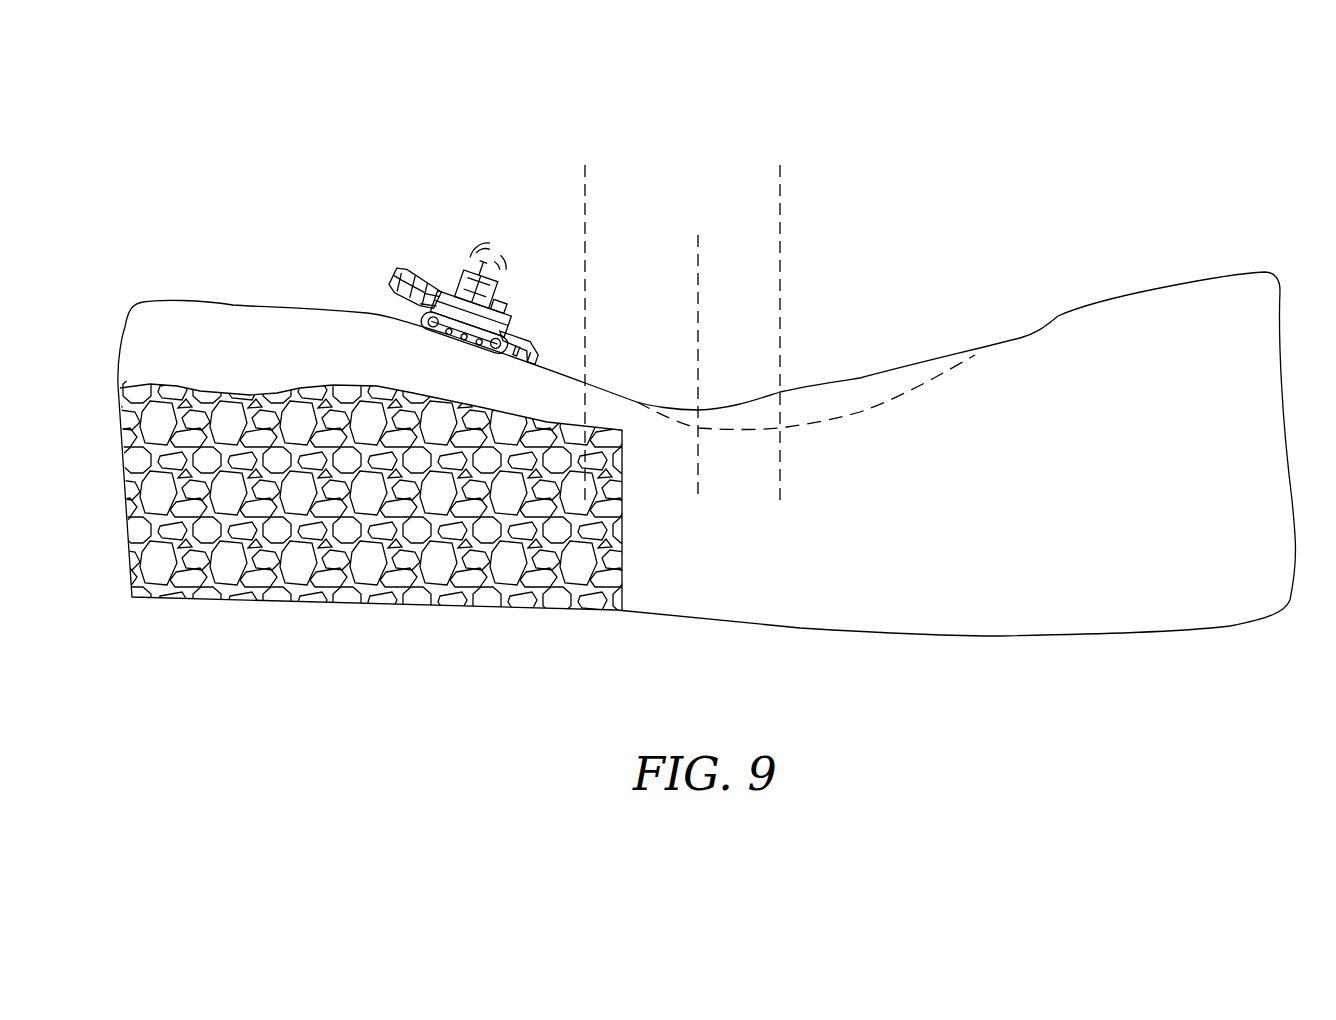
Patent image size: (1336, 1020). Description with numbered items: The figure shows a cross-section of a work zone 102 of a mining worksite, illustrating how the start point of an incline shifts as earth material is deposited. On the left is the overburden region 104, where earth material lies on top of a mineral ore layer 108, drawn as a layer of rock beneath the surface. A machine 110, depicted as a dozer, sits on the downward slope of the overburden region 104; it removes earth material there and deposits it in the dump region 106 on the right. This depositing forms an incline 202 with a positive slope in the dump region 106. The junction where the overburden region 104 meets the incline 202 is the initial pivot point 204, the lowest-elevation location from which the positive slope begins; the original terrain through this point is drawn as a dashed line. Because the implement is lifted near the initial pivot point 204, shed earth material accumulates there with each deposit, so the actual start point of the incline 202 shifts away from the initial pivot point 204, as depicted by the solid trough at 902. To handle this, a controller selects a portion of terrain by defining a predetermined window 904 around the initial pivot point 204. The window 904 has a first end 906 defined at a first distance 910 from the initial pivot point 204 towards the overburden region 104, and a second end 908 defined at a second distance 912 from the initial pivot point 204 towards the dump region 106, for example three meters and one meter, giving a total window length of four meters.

The work zone 102 is at (930, 133).
The overburden region 104 is at (275, 298).
The dump region 106 is at (1100, 272).
The mineral ore layer 108 is at (303, 560).
The machine 110 is at (500, 311).
The incline 202 is at (1022, 340).
The pivot point 204 is at (700, 430).
The shift of start point of the incline 902 is at (637, 400).
The predetermined window 904 is at (780, 172).
The first end 906 is at (585, 383).
The second end 908 is at (785, 390).
The first distance 910 is at (698, 243).
The second distance 912 is at (780, 325).